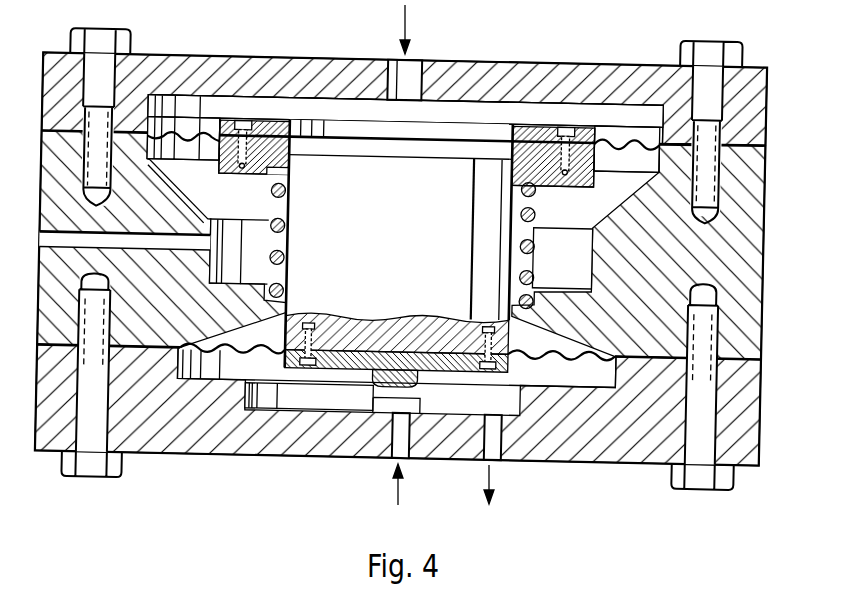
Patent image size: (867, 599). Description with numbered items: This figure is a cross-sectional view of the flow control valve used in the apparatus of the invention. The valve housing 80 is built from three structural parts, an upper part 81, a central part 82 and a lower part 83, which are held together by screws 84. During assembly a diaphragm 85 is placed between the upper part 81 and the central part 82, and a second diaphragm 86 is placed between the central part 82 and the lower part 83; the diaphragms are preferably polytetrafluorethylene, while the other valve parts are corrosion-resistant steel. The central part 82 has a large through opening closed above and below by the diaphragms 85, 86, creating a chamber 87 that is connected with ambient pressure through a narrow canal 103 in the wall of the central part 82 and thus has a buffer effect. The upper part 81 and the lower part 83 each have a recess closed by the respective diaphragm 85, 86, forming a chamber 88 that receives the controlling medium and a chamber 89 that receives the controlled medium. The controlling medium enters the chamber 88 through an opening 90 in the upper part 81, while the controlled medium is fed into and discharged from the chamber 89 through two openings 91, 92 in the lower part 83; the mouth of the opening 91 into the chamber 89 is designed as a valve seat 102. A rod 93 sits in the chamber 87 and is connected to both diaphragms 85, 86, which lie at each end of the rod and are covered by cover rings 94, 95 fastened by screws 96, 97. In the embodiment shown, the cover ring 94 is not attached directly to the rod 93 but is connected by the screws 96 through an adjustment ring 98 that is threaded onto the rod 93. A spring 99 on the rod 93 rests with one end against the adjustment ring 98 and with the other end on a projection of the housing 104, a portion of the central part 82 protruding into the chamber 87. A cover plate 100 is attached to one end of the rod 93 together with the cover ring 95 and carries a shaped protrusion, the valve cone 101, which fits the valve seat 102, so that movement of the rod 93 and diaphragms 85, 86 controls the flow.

The valve housing 80 is at (755, 229).
The upper part 81 is at (755, 109).
The central part 82 is at (752, 322).
The lower part 83 is at (752, 418).
The screws 84 is at (126, 35).
The diaphragm 85 is at (192, 142).
The diaphragm 86 is at (233, 392).
The chamber 87 is at (257, 241).
The chamber 88 is at (204, 105).
The chamber 89 is at (321, 400).
The opening 90 is at (414, 67).
The opening 91 is at (401, 463).
The opening 92 is at (497, 465).
The rod 93 is at (357, 165).
The cover ring 94 is at (589, 145).
The cover ring 95 is at (513, 356).
The screws 96 is at (242, 120).
The screws 97 is at (323, 333).
The adjustment ring 98 is at (588, 183).
The spring 99 is at (533, 251).
The cover plate 100 is at (362, 345).
The valve cone 101 is at (399, 345).
The valve seat 102 is at (402, 394).
The narrow canal 103 is at (63, 244).
The projection of housing 104 is at (284, 303).